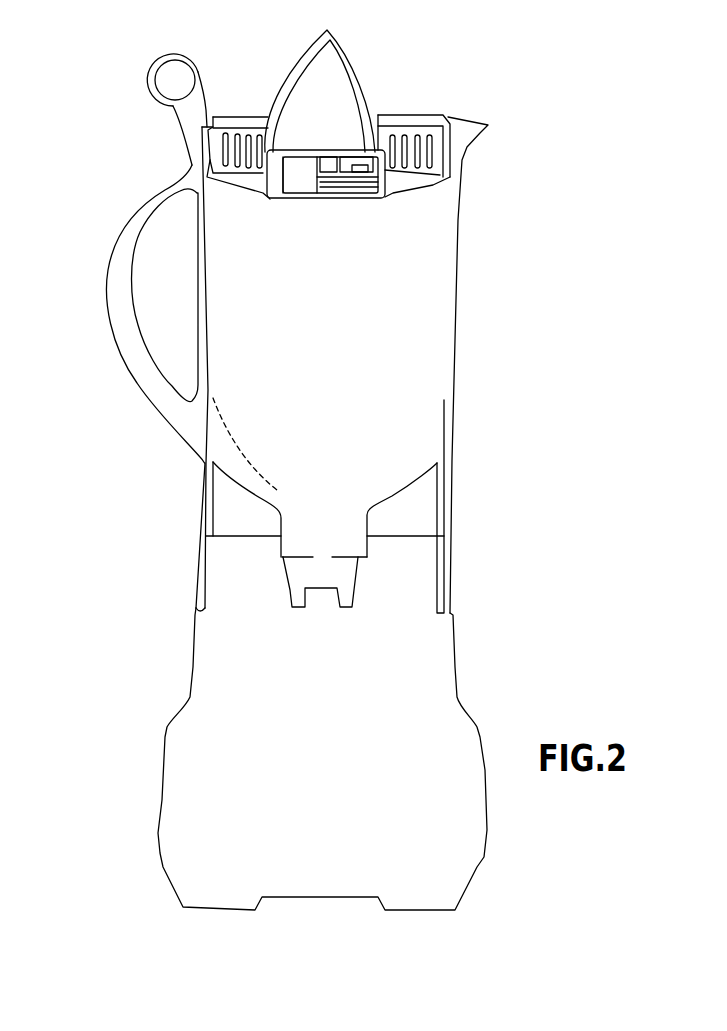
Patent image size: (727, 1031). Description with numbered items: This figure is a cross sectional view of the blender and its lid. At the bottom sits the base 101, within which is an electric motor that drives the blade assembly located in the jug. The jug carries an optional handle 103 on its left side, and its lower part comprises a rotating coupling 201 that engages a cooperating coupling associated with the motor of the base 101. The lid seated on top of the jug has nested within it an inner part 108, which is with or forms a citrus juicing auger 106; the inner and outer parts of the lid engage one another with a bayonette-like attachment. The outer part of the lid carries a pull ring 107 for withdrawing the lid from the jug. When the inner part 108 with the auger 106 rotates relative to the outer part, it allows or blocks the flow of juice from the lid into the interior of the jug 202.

The base 101 is at (428, 670).
The handle 103 is at (135, 357).
The citrus juicing auger 106 is at (340, 80).
The pull ring 107 is at (204, 70).
The inner part 108 is at (405, 140).
The rotating coupling 201 is at (350, 573).
The interior of the jug 202 is at (433, 320).